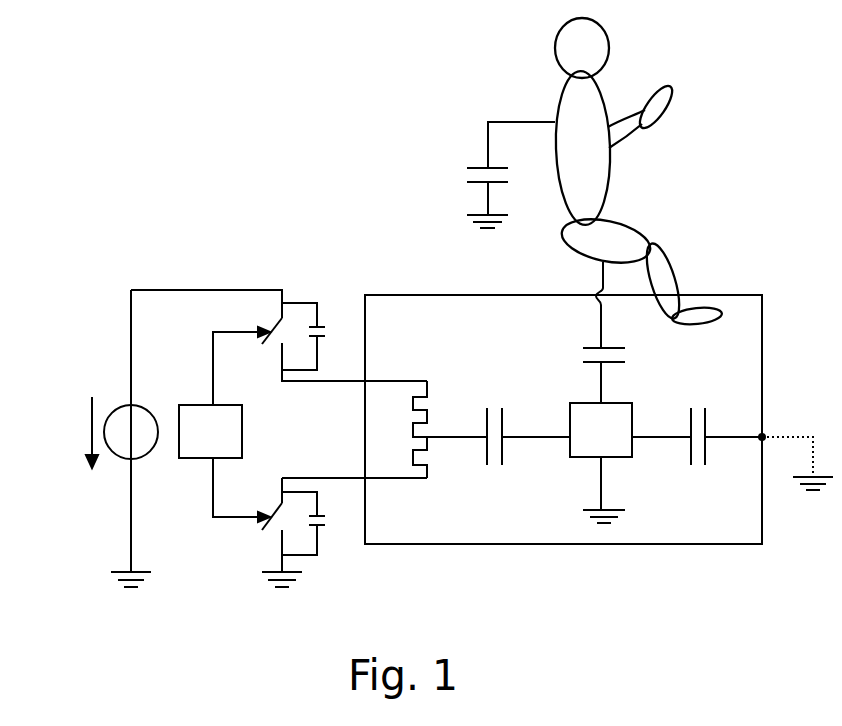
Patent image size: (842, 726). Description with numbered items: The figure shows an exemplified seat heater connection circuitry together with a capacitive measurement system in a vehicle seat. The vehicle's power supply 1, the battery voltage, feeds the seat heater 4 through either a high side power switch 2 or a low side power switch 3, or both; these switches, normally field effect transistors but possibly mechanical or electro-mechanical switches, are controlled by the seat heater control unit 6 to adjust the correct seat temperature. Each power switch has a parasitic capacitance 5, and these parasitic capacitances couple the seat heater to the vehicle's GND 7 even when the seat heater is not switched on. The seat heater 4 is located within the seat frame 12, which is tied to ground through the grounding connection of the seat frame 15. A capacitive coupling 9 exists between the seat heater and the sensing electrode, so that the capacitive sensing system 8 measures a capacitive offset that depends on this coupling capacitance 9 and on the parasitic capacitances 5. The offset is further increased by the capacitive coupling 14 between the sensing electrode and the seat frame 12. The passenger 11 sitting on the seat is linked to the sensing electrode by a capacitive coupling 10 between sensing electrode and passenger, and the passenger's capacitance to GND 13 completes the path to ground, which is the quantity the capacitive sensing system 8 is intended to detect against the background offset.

The vehicle's power supply 1 is at (115, 492).
The high side power switch 2 is at (272, 343).
The low side power switch 3 is at (272, 530).
The seat heater 4 is at (439, 429).
The parasitic capacitance 5 is at (313, 429).
The seat heater control unit 6 is at (224, 424).
The vehicle's GND 7 is at (276, 587).
The capacitive sensing system 8 is at (630, 463).
The capacitive coupling between seat heater and sensing electrode 9 is at (527, 450).
The capacitive coupling between sensing electrode and passenger 10 is at (589, 332).
The passenger 11 is at (624, 172).
The seat frame 12 is at (563, 419).
The passenger's capacitance to GND 13 is at (504, 175).
The capacitive coupling between sensing electrode and seat frame 14 is at (722, 452).
The grounding connection of the seat frame 15 is at (796, 479).